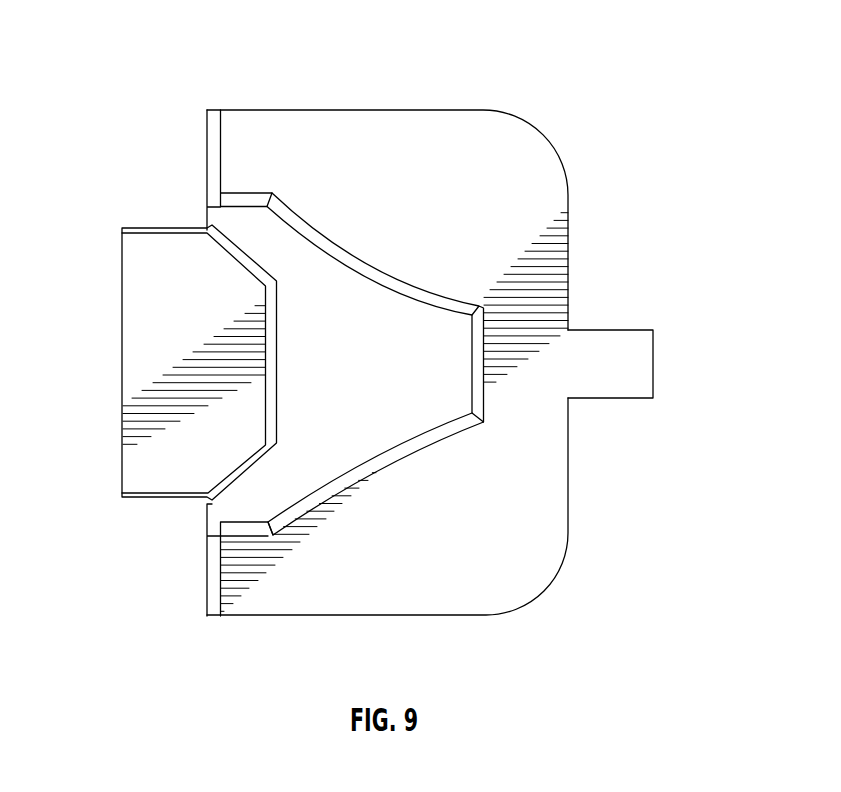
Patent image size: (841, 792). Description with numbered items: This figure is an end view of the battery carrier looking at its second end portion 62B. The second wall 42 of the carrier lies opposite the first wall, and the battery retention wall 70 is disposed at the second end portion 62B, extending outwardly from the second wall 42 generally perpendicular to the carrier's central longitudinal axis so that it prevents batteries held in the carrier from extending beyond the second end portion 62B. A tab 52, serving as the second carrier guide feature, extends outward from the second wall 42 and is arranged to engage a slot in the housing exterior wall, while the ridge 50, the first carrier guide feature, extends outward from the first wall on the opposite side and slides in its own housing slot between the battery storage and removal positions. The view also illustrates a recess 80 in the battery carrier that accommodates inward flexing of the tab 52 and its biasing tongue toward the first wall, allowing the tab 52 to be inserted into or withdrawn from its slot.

The second end portion 62B is at (470, 163).
The second wall 42 is at (200, 154).
The tab 52 is at (146, 372).
The recess 80 is at (360, 368).
The ridge 50 is at (623, 365).
The battery retention wall 70 is at (415, 545).